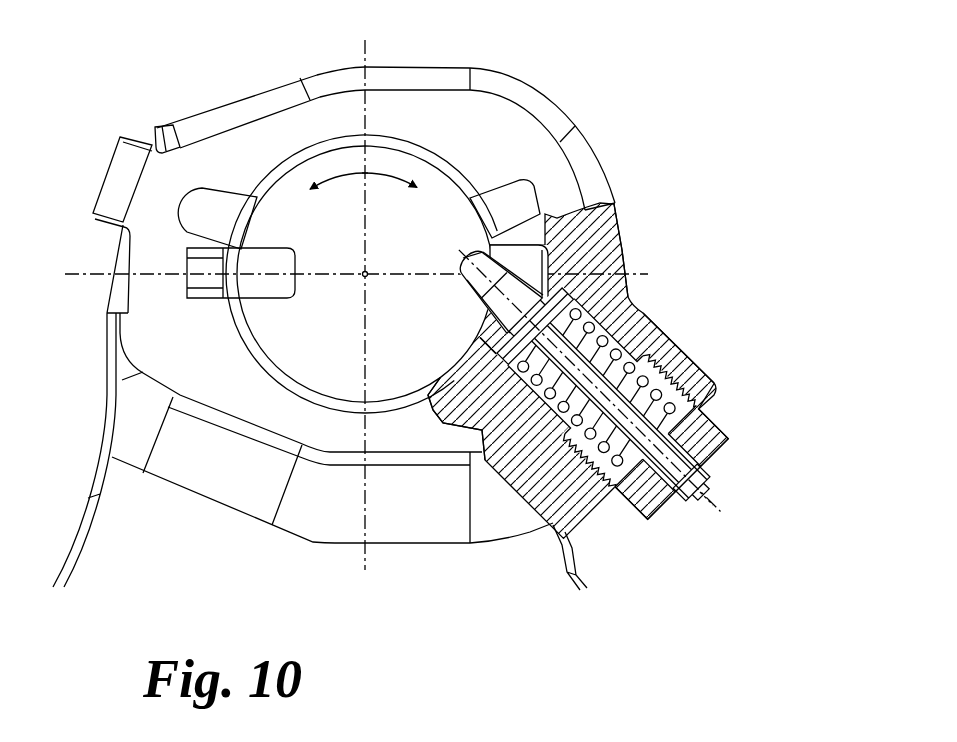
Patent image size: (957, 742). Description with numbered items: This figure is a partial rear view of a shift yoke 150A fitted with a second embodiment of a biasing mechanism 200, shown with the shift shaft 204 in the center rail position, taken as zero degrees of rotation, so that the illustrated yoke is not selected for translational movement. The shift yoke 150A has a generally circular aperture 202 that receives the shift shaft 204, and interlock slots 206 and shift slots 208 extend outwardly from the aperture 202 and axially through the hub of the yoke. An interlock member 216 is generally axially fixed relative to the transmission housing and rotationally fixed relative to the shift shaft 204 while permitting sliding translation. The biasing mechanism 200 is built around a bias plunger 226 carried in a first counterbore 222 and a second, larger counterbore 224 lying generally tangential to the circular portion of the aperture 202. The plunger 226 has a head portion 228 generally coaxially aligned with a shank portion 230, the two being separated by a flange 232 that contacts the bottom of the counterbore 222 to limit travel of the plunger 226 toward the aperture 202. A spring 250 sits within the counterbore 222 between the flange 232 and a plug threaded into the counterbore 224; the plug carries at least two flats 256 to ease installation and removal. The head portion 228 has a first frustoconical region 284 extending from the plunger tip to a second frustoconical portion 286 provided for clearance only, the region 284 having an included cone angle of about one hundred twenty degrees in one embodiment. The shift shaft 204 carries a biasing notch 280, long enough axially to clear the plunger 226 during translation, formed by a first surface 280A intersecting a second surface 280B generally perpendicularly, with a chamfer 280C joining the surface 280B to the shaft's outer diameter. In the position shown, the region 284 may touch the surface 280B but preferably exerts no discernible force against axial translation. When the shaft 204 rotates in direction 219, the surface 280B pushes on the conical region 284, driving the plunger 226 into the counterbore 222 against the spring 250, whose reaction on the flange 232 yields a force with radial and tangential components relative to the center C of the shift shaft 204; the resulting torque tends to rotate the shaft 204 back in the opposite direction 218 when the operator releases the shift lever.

The biasing mechanism 200 is at (565, 381).
The aperture 202 is at (237, 327).
The shift shaft 204 is at (400, 140).
The shift yoke 150A is at (492, 110).
The interlock slots 206 is at (222, 200).
The shift slots 208 is at (493, 187).
The interlock member 216 is at (245, 237).
The direction 218 is at (345, 193).
The direction 219 is at (409, 193).
The first counterbore 222 is at (618, 330).
The second counterbore 224 is at (553, 523).
The bias plunger 226 is at (690, 505).
The head portion 228 is at (445, 421).
The shank portion 230 is at (648, 350).
The flange 232 is at (617, 262).
The spring 250 is at (487, 473).
The flats 256 is at (713, 413).
The biasing notch 280 is at (463, 306).
The first surface 280A is at (482, 340).
The second surface 280B is at (445, 283).
The chamfer 280C is at (482, 241).
The first frustoconical region 284 is at (468, 262).
The second frustoconical portion 286 is at (455, 297).
The center C is at (363, 272).